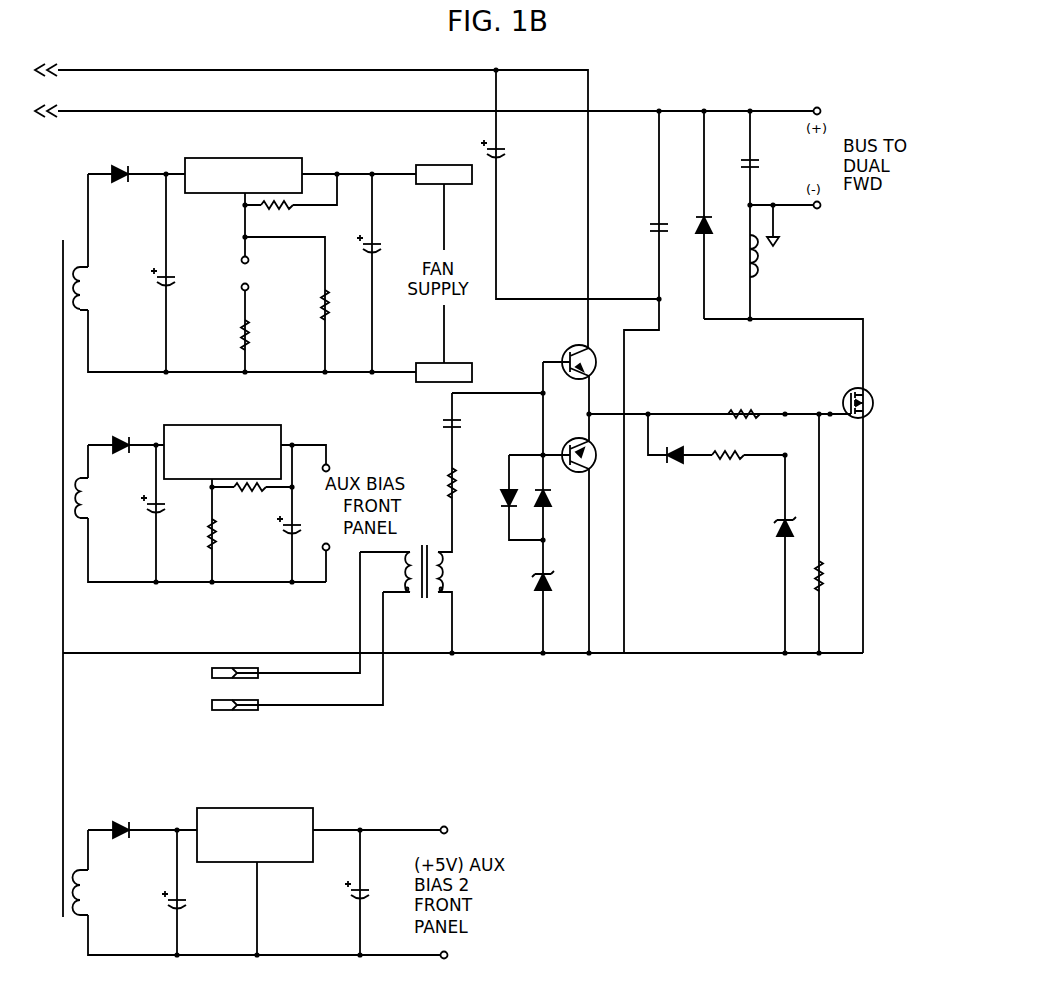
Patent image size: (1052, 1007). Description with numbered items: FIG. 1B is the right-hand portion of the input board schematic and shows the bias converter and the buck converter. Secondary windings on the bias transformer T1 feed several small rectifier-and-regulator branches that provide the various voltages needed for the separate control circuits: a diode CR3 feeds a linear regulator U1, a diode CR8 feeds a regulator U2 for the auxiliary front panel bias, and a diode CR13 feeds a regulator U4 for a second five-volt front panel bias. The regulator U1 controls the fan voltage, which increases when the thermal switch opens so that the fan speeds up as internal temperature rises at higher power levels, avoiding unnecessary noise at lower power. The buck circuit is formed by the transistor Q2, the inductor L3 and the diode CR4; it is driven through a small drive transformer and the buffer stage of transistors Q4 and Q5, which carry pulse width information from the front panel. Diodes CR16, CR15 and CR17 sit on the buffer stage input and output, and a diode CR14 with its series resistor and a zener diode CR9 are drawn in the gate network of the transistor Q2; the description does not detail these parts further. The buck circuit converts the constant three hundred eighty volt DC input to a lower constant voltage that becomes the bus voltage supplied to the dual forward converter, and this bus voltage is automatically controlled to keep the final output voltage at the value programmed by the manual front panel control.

The bias transformer T1 is at (68, 568).
The rectifier diode CR3 is at (120, 164).
The linear regulator U1 is at (243, 164).
The rectifier diode CR8 is at (123, 437).
The voltage regulator U2 is at (222, 441).
The rectifier diode CR13 is at (127, 820).
The voltage regulator U4 is at (255, 826).
The buck circuit diode CR4 is at (687, 215).
The buck circuit inductor L3 is at (775, 256).
The buffer stage transistor Q4 is at (562, 362).
The buffer stage transistor Q5 is at (552, 447).
The diode CR16 is at (495, 497).
The diode CR15 is at (557, 517).
The zener diode CR17 is at (510, 583).
The diode CR14 is at (684, 446).
The zener diode CR9 is at (762, 529).
The buck circuit transistor Q2 is at (869, 403).